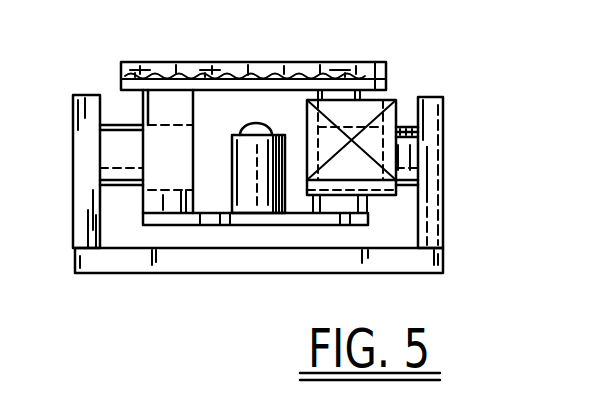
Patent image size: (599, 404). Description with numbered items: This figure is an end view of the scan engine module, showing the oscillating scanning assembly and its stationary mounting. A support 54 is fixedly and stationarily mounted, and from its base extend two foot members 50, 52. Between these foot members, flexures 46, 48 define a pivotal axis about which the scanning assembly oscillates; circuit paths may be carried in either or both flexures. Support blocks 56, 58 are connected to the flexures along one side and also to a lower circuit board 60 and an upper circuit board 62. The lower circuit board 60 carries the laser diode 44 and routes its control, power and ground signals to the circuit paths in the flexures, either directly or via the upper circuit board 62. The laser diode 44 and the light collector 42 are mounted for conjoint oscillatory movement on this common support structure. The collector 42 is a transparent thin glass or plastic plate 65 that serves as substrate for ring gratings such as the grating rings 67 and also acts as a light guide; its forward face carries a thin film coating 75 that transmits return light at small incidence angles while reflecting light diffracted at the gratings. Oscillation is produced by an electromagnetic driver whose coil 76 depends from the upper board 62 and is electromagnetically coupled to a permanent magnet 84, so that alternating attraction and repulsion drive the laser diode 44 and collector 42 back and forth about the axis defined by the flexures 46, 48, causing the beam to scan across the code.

The light collector 42 is at (303, 63).
The coating 75 is at (162, 62).
The grating rings 67 is at (228, 63).
The plate 65 is at (342, 63).
The upper circuit board 62 is at (383, 83).
The laser diode 44 is at (251, 130).
The support block 56 is at (182, 168).
The flexure 46 is at (105, 157).
The flexure 48 is at (407, 150).
The coil 76 is at (387, 117).
The permanent magnet 84 is at (428, 188).
The foot member 50 is at (75, 202).
The foot member 52 is at (443, 237).
The support 54 is at (310, 275).
The support block 58 is at (366, 215).
The lower circuit board 60 is at (223, 226).